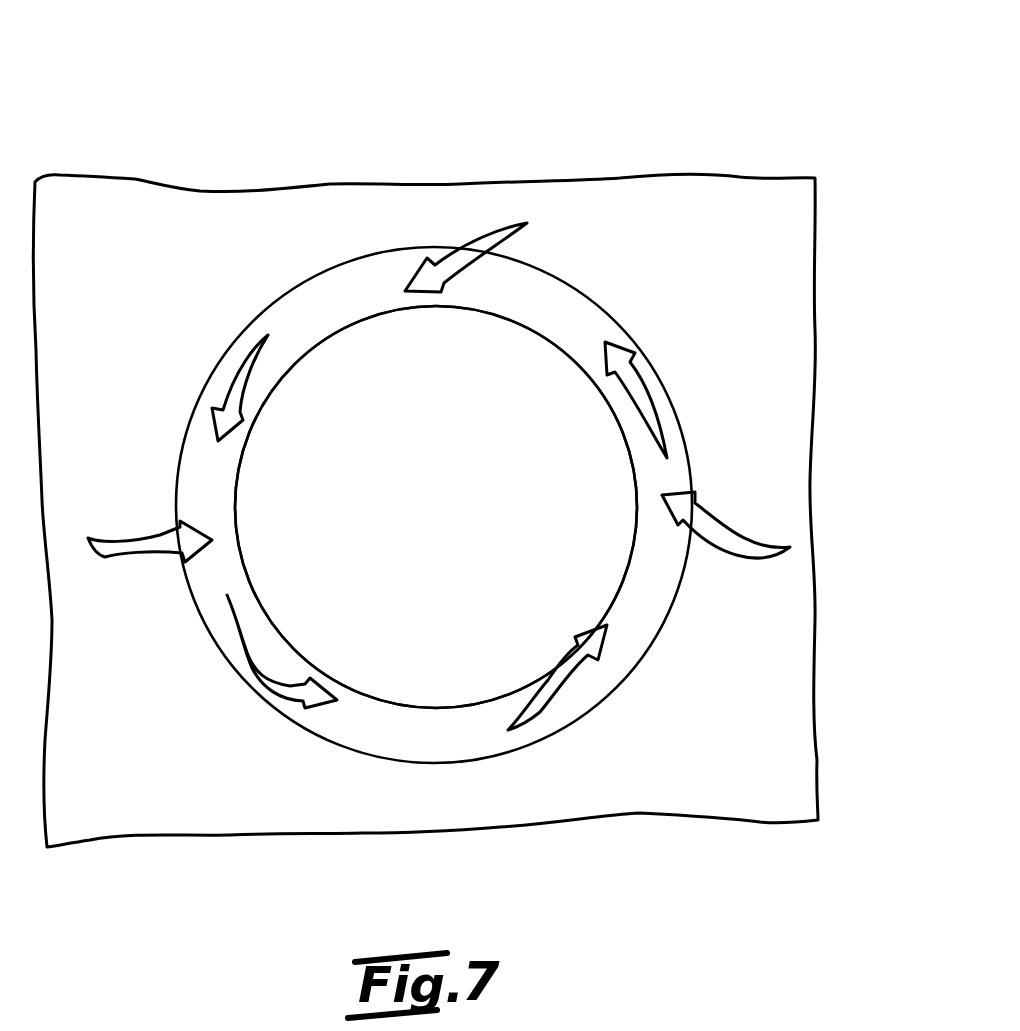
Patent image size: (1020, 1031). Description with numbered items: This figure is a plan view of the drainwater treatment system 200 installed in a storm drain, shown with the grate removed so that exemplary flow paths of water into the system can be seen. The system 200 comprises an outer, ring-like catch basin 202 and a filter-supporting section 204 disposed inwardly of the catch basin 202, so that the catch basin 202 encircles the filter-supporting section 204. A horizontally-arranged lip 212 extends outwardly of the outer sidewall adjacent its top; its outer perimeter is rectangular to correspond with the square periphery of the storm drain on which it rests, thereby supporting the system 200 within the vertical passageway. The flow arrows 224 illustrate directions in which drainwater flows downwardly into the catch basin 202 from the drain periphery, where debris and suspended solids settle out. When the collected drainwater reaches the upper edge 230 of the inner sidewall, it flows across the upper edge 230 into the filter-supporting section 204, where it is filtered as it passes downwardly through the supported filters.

The system 200 is at (790, 146).
The catch basin 202 is at (450, 505).
The filter-supporting section 204 is at (465, 578).
The lip 212 is at (596, 318).
The upper edge 230 is at (530, 330).
The flow arrows 224 is at (490, 227).